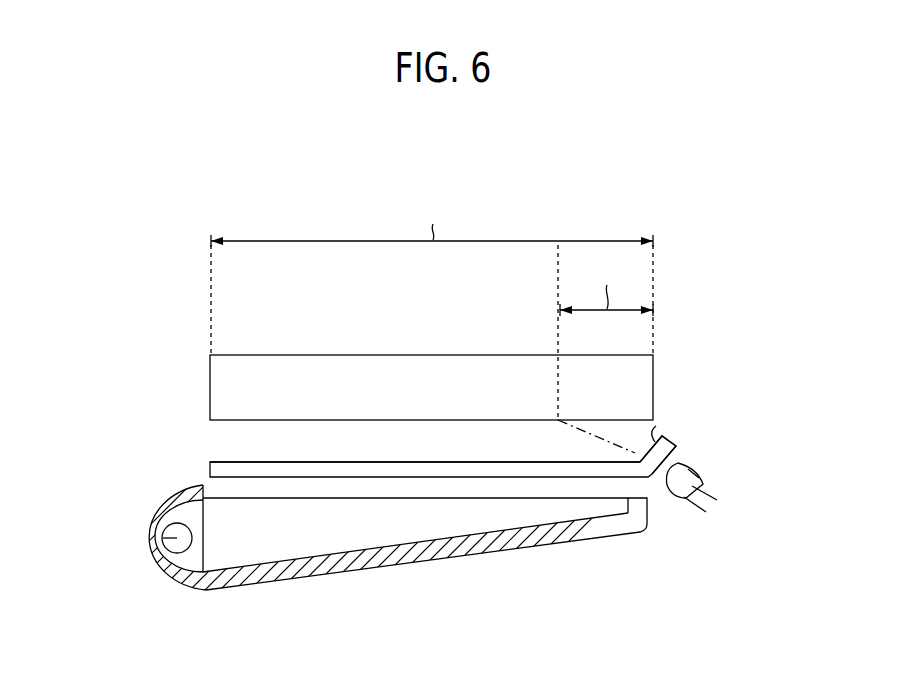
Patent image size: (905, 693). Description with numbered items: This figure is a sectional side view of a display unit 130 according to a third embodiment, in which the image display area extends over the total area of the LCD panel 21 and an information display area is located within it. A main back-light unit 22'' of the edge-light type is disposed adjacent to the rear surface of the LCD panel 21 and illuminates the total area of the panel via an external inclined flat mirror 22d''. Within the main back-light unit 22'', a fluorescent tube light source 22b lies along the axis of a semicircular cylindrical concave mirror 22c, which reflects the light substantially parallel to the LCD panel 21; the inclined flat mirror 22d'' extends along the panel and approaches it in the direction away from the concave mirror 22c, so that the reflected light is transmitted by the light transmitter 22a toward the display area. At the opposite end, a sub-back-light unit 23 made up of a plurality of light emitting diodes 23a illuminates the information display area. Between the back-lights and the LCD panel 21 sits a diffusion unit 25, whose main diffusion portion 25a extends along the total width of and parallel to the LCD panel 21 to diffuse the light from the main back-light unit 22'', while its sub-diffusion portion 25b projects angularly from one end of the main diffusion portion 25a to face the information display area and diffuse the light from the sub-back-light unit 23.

The display unit 130 is at (682, 186).
The LCD panel 21 is at (656, 384).
The diffusion unit 25 is at (450, 420).
The main diffusion portion 25a is at (330, 460).
The sub-diffusion portion 25b is at (660, 427).
The sub-back-light unit 23 is at (722, 517).
The light emitting diodes 23a is at (700, 472).
The main back-light unit 22'' is at (355, 546).
The light transmitter 22a is at (568, 510).
The light source 22b is at (158, 533).
The semicircular cylindrical concave mirror 22c is at (150, 577).
The external inclined flat mirror 22d'' is at (421, 577).